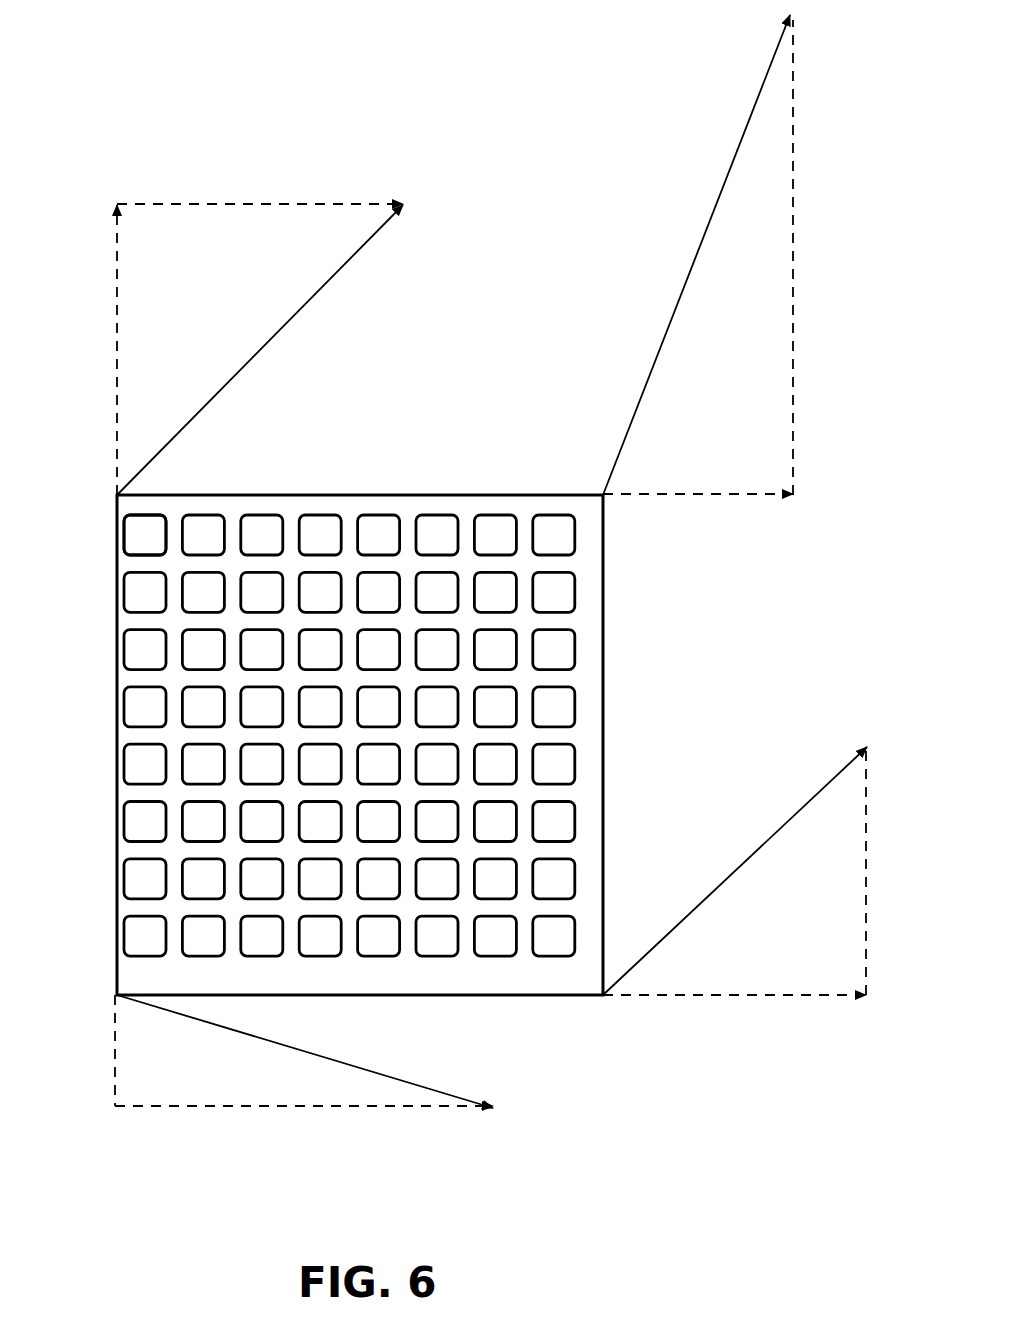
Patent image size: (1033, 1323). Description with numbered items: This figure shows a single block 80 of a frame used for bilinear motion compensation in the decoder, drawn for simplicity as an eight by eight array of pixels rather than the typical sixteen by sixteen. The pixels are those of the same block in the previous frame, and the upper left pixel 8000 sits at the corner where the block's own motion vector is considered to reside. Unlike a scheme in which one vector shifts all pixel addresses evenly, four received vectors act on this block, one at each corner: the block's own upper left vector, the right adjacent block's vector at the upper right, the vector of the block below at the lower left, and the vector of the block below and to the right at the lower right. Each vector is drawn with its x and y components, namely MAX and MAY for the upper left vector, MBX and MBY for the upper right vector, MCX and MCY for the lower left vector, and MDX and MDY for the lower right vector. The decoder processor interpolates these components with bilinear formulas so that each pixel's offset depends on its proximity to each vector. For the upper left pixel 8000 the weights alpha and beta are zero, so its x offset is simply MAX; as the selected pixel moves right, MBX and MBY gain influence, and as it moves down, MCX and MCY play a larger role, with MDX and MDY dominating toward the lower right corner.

The block 80 is at (342, 494).
The upper left pixel 8000 is at (147, 535).
The x component of upper left vector MA MAX is at (260, 340).
The y component of upper left vector MA MAY is at (116, 350).
The x component of upper right vector MB MBX is at (698, 489).
The y component of upper right vector MB MBY is at (710, 255).
The x component of lower left vector MC MCX is at (304, 1057).
The y component of lower left vector MC MCY is at (105, 1050).
The x component of lower right vector MD MDX is at (734, 994).
The y component of lower right vector MD MDY is at (750, 871).